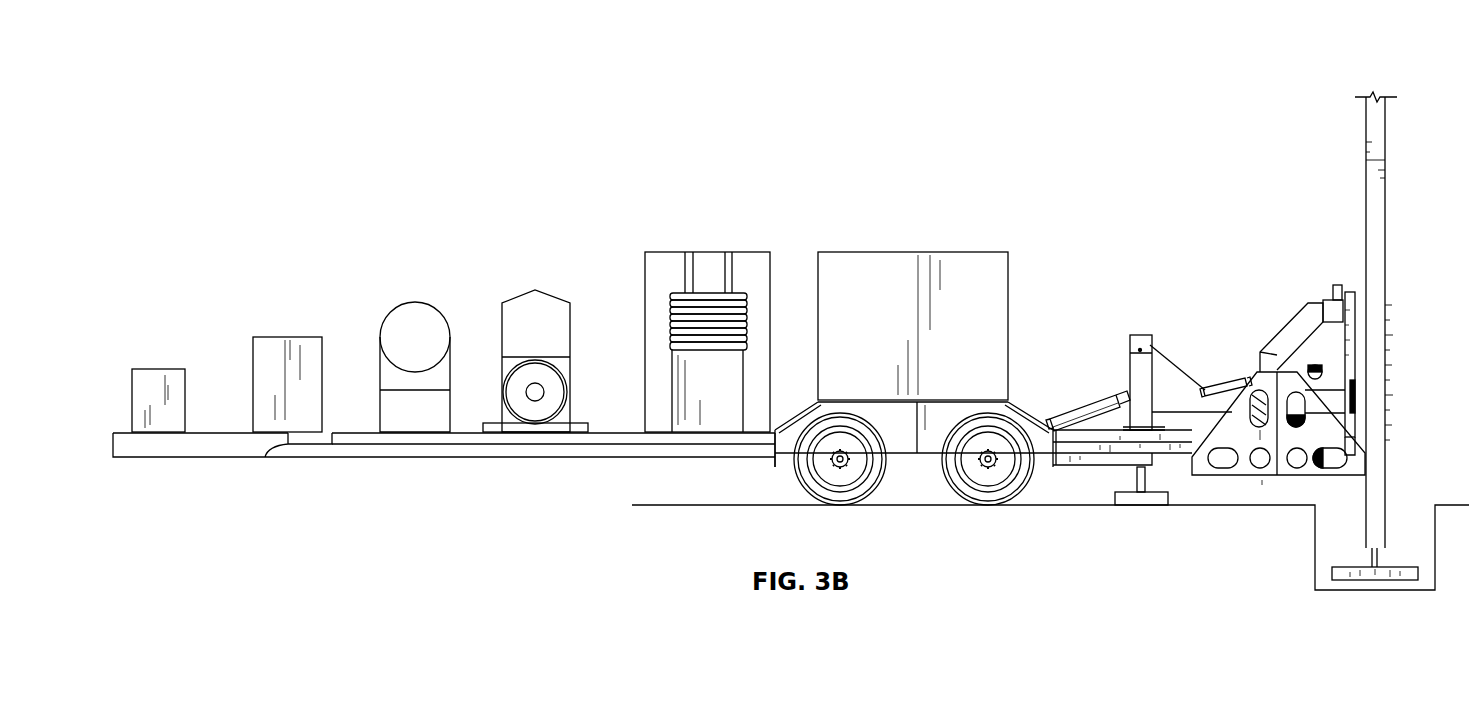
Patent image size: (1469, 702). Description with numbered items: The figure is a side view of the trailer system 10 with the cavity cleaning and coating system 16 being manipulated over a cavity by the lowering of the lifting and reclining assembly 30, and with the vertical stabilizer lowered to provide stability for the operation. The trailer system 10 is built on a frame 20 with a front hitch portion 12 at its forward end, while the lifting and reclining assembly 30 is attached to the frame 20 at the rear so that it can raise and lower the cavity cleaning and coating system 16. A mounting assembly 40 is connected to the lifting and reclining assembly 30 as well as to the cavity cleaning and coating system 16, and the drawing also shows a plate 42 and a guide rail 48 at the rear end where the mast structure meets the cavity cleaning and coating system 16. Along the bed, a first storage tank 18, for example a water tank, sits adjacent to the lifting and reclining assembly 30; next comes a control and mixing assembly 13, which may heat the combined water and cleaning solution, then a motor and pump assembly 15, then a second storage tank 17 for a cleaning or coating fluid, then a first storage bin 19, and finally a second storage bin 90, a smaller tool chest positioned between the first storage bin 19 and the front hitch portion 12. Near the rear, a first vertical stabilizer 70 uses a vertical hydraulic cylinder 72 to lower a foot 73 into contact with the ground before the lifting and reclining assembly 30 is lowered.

The trailer system 10 is at (803, 60).
The front hitch portion 12 is at (104, 445).
The control and mixing assembly 13 is at (712, 252).
The motor and pump assembly 15 is at (535, 290).
The cavity cleaning and coating system 16 is at (1390, 196).
The second storage tank 17 is at (416, 302).
The first storage tank 18 is at (922, 252).
The first storage bin 19 is at (284, 337).
The frame 20 is at (359, 461).
The lifting and reclining assembly 30 is at (1263, 483).
The mounting assembly 40 is at (1289, 317).
The connecting beam assembly 42 is at (1195, 476).
The guide rail 48 is at (1357, 325).
The first vertical stabilizer 70 is at (1159, 362).
The vertical hydraulic cylinder 72 is at (1130, 477).
The foot 73 is at (1138, 500).
The second storage bin 90 is at (141, 369).